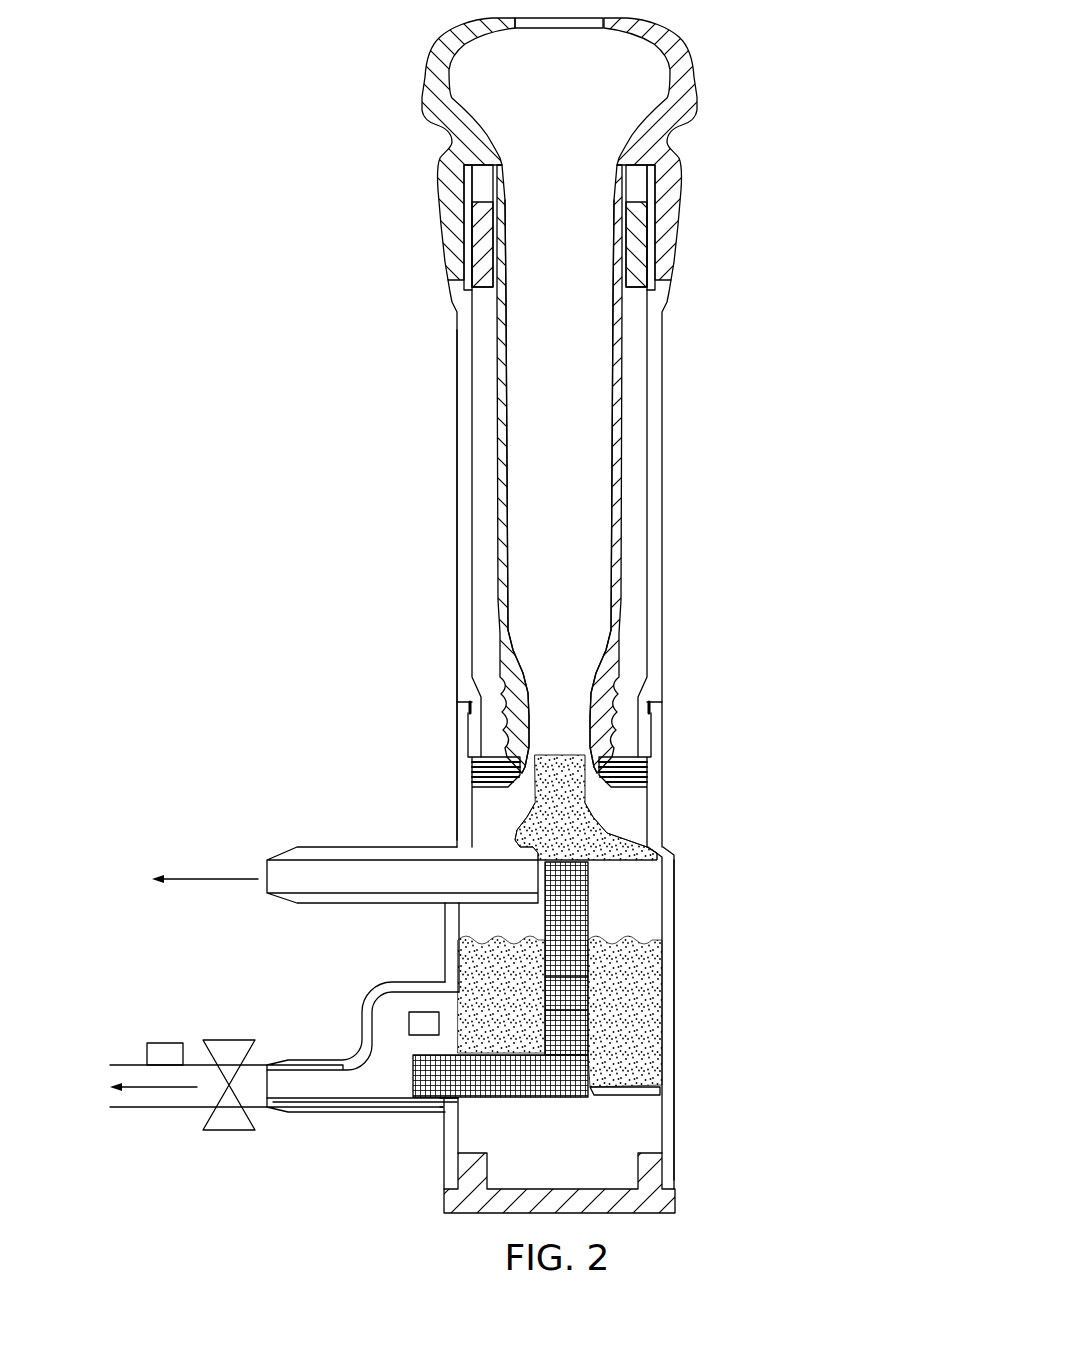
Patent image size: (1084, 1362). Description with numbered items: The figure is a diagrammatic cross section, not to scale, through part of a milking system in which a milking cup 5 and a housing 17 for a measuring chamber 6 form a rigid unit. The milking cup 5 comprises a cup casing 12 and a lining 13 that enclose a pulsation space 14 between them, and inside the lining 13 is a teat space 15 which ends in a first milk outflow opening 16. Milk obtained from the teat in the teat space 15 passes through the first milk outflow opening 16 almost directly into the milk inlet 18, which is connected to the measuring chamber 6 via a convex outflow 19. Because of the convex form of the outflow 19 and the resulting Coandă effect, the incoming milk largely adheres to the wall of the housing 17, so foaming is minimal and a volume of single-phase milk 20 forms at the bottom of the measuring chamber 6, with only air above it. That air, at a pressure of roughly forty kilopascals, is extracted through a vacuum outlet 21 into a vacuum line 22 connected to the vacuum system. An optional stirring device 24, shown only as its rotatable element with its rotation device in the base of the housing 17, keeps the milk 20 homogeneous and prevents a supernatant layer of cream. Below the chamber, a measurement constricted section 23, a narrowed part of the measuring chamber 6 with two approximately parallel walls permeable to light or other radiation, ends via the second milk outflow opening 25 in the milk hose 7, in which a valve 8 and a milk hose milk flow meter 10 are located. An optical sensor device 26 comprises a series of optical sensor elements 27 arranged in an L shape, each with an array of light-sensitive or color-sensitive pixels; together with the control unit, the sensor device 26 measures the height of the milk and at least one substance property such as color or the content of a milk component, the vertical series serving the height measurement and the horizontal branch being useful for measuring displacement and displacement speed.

The milking cup 5 is at (380, 321).
The measuring chamber 6 is at (690, 948).
The milk hose 7 is at (313, 1064).
The valve 8 is at (229, 1046).
The milk hose milk flow meter 10 is at (163, 1051).
The cup casing 12 is at (653, 330).
The lining 13 is at (618, 413).
The pulsation space 14 is at (633, 489).
The teat space 15 is at (563, 147).
The first milk outflow opening 16 is at (556, 730).
The housing 17 is at (672, 973).
The milk inlet 18 is at (563, 794).
The convex outflow 19 is at (562, 826).
The milk 20 is at (628, 1006).
The vacuum outlet 21 is at (537, 877).
The vacuum line 22 is at (313, 857).
The measurement constricted section 23 is at (393, 1037).
The stirring device 24 is at (425, 1025).
The second milk outflow opening 25 is at (328, 1088).
The optical sensor device 26 is at (455, 1110).
The optical sensor elements 27 is at (522, 1070).